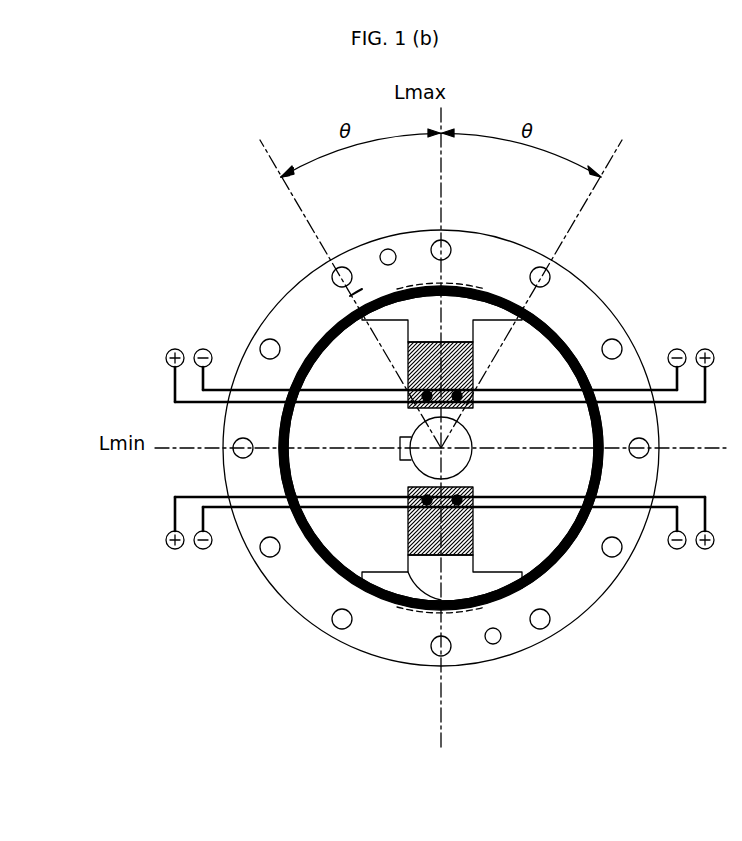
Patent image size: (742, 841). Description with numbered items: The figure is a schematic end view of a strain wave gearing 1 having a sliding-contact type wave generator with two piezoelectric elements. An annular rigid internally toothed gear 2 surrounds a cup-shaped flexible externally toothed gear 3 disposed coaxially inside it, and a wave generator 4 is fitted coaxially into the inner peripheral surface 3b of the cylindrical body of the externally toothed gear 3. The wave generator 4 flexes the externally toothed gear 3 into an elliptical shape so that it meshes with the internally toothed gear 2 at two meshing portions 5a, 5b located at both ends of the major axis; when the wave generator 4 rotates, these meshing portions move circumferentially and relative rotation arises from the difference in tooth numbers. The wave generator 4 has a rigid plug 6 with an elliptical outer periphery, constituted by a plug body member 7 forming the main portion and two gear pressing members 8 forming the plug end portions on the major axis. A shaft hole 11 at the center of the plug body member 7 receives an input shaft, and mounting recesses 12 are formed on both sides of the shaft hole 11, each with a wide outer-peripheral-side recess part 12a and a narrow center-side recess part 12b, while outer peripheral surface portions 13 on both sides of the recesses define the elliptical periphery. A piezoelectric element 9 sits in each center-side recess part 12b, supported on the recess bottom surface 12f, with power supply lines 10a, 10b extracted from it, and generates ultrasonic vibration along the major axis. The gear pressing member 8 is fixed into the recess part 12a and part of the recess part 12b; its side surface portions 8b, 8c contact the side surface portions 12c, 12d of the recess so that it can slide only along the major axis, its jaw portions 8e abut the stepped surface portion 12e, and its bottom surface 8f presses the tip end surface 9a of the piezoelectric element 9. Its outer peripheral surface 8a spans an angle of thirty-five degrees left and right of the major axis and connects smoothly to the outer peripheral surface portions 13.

The strain wave gearing 1 is at (575, 218).
The rigid internally toothed gear 2 is at (313, 271).
The flexible externally toothed gear 3 is at (325, 316).
The inner peripheral surface 3b is at (352, 296).
The wave generator 4 is at (324, 350).
The meshing portion 5a is at (466, 268).
The meshing portion 5b is at (466, 618).
The rigid plug 6 is at (660, 618).
The plug body member 7 is at (553, 543).
The gear pressing member 8 is at (413, 262).
The outer peripheral surface of gear pressing member 8a is at (385, 300).
The side surface portion 8b is at (400, 580).
The side surface portion 8c is at (395, 575).
The jaw portion 8e is at (420, 560).
The bottom surface of gear pressing member 8f is at (418, 545).
The piezoelectric element 9 is at (405, 352).
The tip end surface of piezoelectric element 9a is at (480, 524).
The power supply line 10a is at (203, 348).
The power supply line 10b is at (170, 370).
The shaft hole 11 is at (420, 460).
The mounting recess 12 is at (479, 497).
The outer-peripheral-side recess part 12a is at (445, 383).
The center-side recess part 12b is at (475, 355).
The side surface portion 12c is at (425, 590).
The side surface portion 12d is at (441, 612).
The stepped surface portion 12e is at (460, 590).
The recess bottom surface 12f is at (452, 390).
The outer peripheral surface portion 13 is at (400, 424).